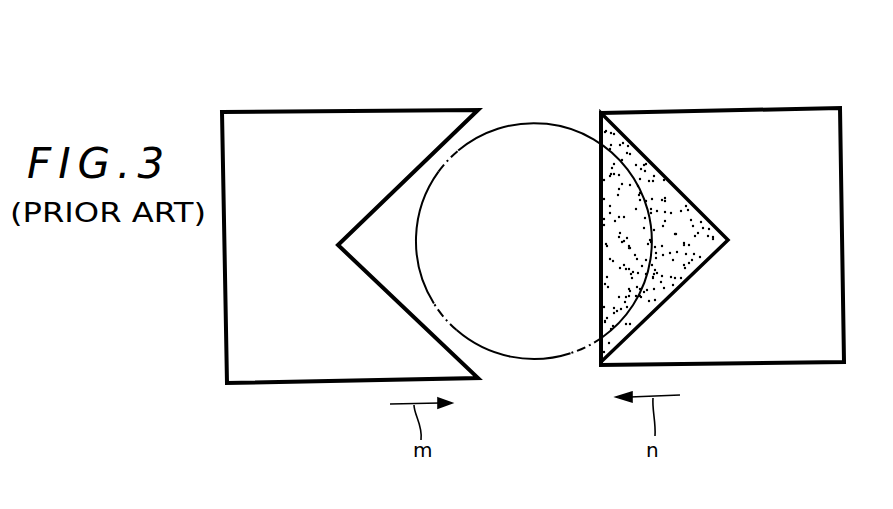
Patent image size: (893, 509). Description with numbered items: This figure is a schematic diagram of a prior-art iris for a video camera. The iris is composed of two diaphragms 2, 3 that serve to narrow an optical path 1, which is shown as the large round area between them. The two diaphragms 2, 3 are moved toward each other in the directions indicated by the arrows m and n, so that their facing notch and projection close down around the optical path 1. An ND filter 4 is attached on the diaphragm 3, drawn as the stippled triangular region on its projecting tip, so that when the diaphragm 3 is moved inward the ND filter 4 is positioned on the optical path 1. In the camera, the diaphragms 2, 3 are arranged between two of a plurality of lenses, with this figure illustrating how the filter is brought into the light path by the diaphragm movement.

The optical path 1 is at (513, 122).
The diaphragm 2 is at (298, 111).
The diaphragm 3 is at (791, 108).
The ND filter 4 is at (608, 162).